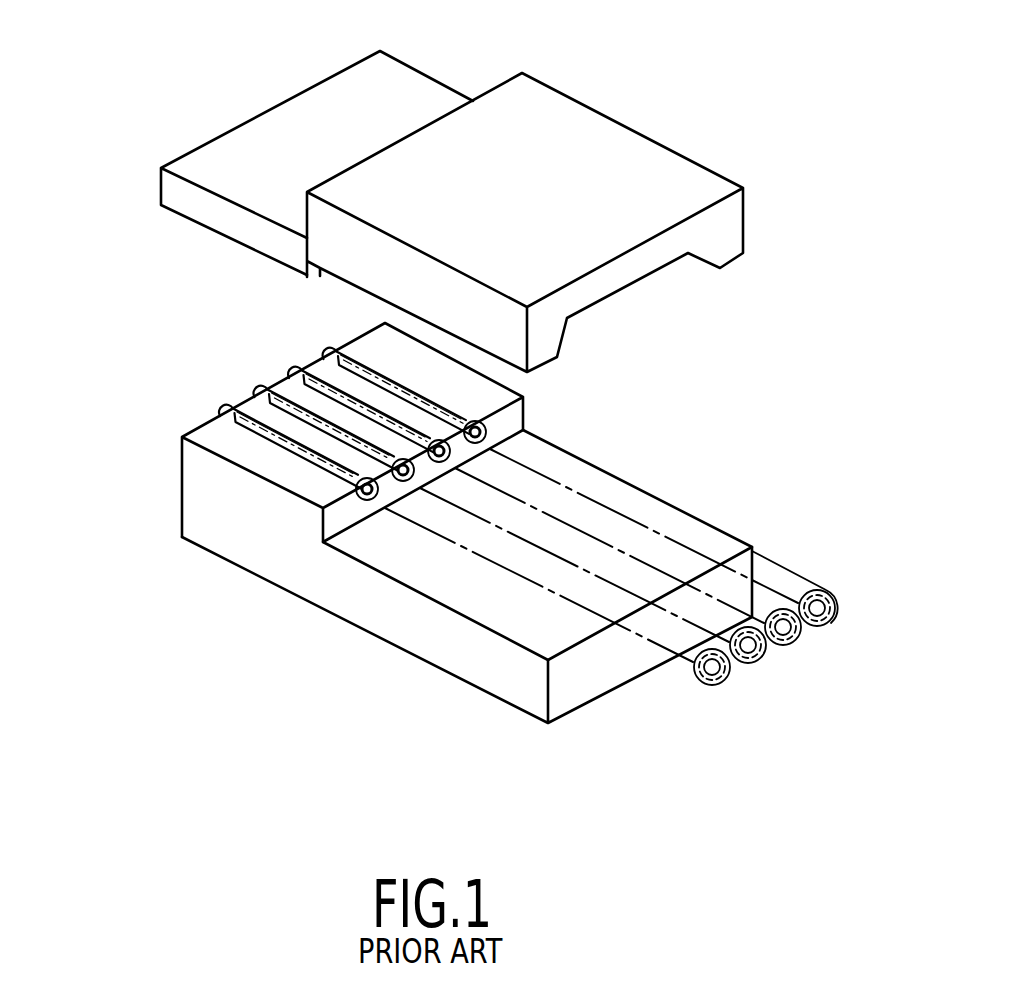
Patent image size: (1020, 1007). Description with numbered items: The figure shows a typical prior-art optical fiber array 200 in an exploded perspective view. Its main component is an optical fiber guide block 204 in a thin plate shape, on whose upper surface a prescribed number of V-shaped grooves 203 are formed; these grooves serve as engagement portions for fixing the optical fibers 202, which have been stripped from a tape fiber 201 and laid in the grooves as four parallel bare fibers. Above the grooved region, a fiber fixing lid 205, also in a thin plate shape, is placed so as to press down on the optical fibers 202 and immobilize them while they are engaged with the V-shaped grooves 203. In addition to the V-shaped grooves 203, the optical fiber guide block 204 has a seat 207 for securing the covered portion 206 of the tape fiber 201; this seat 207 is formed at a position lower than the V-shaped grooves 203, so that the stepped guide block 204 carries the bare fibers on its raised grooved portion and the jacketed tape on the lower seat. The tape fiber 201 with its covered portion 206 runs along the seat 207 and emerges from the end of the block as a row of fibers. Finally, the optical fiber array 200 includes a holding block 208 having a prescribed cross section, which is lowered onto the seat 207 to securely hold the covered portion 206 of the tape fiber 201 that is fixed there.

The optical fiber array 200 is at (838, 98).
The tape fiber 201 is at (621, 547).
The optical fibers 202 is at (294, 424).
The V-shaped grooves 203 is at (333, 387).
The optical fiber guide block 204 is at (288, 432).
The fiber fixing lid 205 is at (317, 154).
The covered portion 206 is at (637, 518).
The seat 207 is at (467, 630).
The holding block 208 is at (525, 199).